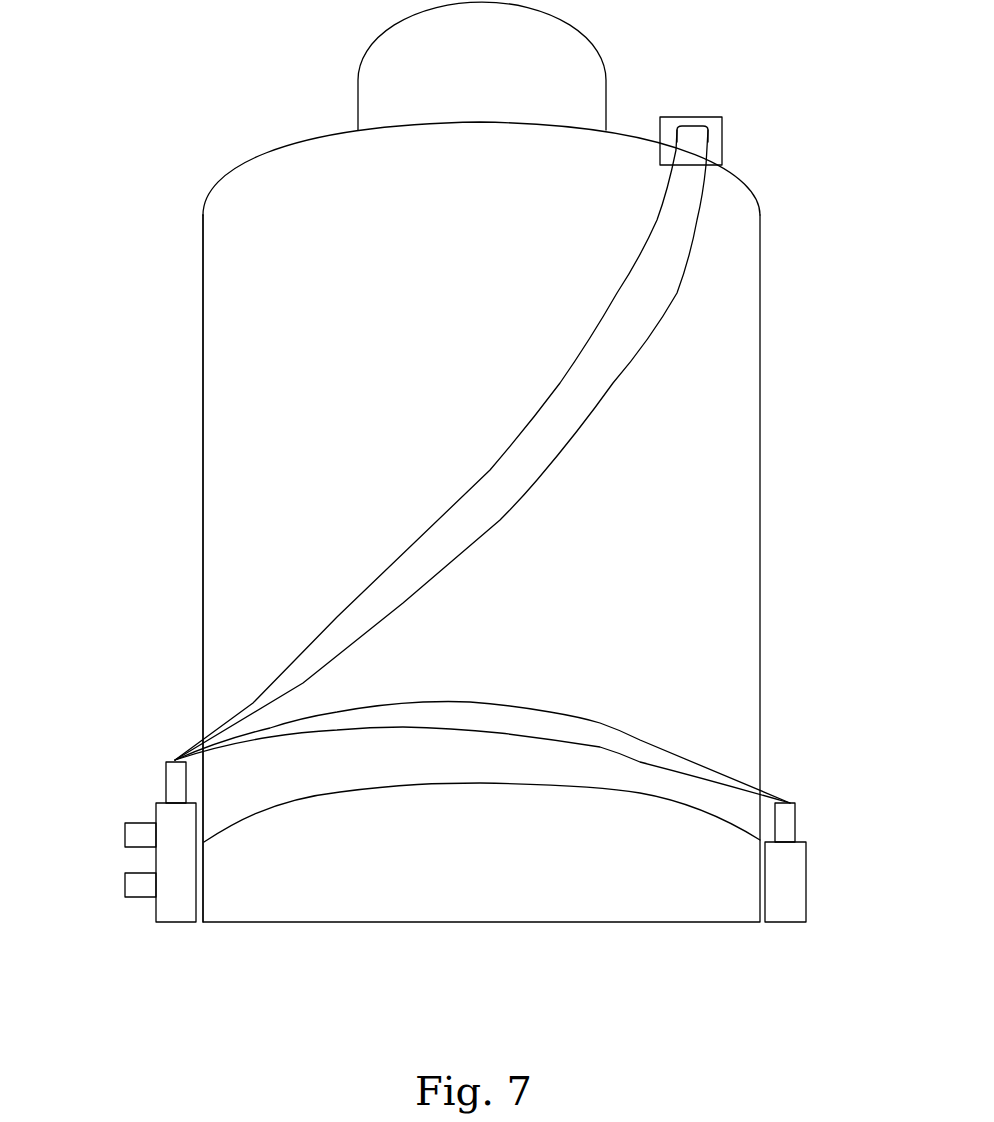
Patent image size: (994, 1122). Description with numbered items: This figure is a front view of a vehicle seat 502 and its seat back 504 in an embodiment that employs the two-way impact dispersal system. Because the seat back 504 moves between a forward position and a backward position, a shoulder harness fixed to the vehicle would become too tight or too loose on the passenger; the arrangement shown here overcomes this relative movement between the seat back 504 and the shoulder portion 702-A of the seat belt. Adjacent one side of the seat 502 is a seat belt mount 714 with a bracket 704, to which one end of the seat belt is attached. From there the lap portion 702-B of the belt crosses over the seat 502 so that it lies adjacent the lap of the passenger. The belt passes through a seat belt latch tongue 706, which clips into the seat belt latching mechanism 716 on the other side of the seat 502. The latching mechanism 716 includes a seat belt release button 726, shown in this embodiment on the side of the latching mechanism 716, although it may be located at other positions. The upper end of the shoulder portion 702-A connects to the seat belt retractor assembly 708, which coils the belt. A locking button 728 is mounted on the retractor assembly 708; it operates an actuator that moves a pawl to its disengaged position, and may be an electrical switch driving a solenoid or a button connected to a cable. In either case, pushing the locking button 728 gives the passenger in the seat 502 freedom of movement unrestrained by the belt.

The vehicle seat 502 is at (323, 922).
The seat back 504 is at (203, 547).
The shoulder portion of the seat belt 702-A is at (498, 459).
The lap portion of the seat belt 702-B is at (630, 733).
The bracket 704 is at (795, 818).
The seat belt latch tongue 706 is at (166, 784).
The seat belt retractor assembly 708 is at (677, 117).
The seat belt mount 714 is at (786, 922).
The seat belt latching mechanism 716 is at (170, 922).
The seat belt release button 726 is at (125, 885).
The locking button 728 is at (125, 833).